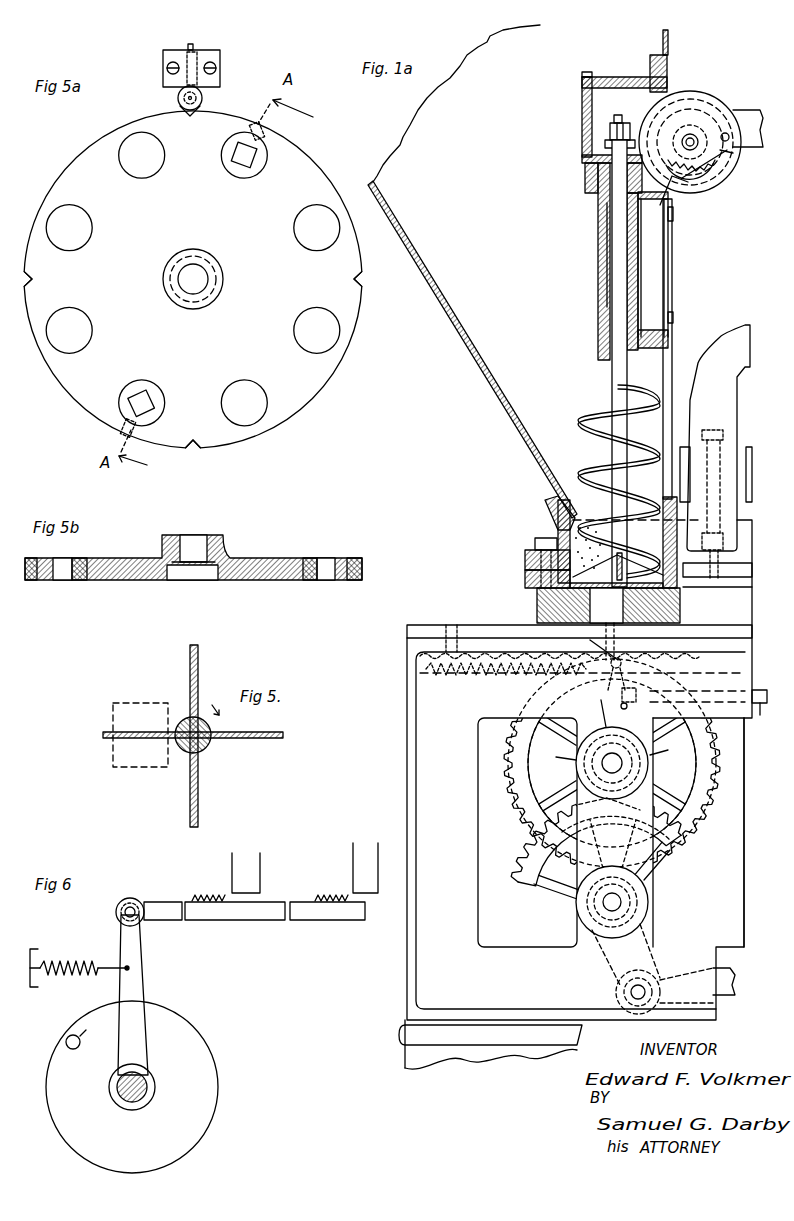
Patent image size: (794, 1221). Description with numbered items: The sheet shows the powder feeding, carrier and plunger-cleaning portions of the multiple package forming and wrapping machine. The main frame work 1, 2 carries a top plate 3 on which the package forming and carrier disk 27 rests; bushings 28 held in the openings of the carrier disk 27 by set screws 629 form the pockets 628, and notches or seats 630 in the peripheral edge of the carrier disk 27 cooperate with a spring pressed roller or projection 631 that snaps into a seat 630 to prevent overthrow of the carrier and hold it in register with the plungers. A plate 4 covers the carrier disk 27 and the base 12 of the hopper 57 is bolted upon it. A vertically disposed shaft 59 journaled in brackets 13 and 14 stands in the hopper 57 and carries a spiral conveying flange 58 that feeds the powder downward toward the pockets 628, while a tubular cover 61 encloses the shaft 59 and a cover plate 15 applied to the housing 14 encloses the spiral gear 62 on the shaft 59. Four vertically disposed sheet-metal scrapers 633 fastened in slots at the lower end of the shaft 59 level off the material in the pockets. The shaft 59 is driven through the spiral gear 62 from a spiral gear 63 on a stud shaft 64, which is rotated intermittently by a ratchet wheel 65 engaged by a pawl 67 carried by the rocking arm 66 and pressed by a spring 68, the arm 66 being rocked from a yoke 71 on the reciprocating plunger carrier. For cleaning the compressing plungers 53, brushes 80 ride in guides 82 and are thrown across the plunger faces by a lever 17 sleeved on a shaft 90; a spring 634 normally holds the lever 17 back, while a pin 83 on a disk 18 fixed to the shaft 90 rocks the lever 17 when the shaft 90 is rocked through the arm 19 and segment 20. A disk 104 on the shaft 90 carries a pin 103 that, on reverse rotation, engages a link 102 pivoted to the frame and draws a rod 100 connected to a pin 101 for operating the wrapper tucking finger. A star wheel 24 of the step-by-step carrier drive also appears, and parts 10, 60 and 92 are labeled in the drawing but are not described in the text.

In FIG. 1A, the main frame work 1 is at (399, 1036).
In FIG. 1A, the main frame work 2 is at (407, 822).
In FIG. 1A, the top plate 3 is at (413, 625).
In FIG. 1A, the plate 4 is at (526, 580).
In FIG. 1A, the standard 10 is at (752, 340).
In FIG. 1A, the base of the hopper 12 is at (526, 560).
In FIG. 1A, the bracket 13 is at (596, 340).
In FIG. 1A, the bracket 14 is at (581, 106).
In FIG. 1A, the cover plate 15 is at (620, 76).
In FIG. 6, the lever 17 is at (142, 952).
In FIG. 6, the disk 18 is at (193, 1033).
In FIG. 1A, the disk 18 is at (563, 766).
In FIG. 1A, the arm 19 is at (737, 952).
In FIG. 1A, the segment 20 is at (527, 862).
In FIG. 1A, the star wheel 24 is at (655, 770).
In FIG. 5A, the carrier disk 27 is at (310, 378).
In FIG. 5B, the carrier disk 27 is at (193, 557).
In FIG. 1A, the carrier disk 27 is at (537, 606).
In FIG. 5A, the bushing 28 is at (158, 416).
In FIG. 5B, the bushing 28 is at (80, 558).
In FIG. 6, the compressing plungers 53 is at (262, 858).
In FIG. 1A, the hopper 57 is at (470, 362).
In FIG. 1A, the spiral conveying flange 58 is at (600, 444).
In FIG. 5, the shaft 59 is at (208, 745).
In FIG. 1A, the shaft 59 is at (614, 229).
In FIG. 1A, the bearing 60 is at (600, 362).
In FIG. 1A, the tubular cover 61 is at (596, 253).
In FIG. 1A, the spiral gear 62 is at (604, 144).
In FIG. 1A, the spiral gear 63 is at (682, 197).
In FIG. 1A, the stud shaft 64 is at (693, 134).
In FIG. 1A, the ratchet wheel 65 is at (695, 175).
In FIG. 1A, the arm 66 is at (758, 110).
In FIG. 1A, the pawl 67 is at (720, 160).
In FIG. 1A, the spring 68 is at (728, 140).
In FIG. 1A, the yoke 71 is at (552, 520).
In FIG. 6, the brushes 80 is at (270, 885).
In FIG. 6, the guides 82 is at (275, 920).
In FIG. 1A, the guides 82 is at (598, 525).
In FIG. 6, the pin 83 is at (66, 1042).
In FIG. 1A, the pin 83 is at (549, 752).
In FIG. 6, the shaft 90 is at (150, 1090).
In FIG. 1A, the shaft 90 is at (622, 765).
In FIG. 1A, the disk 92 is at (622, 900).
In FIG. 1A, the rod 100 is at (759, 717).
In FIG. 1A, the pin 101 is at (580, 655).
In FIG. 1A, the link 102 is at (644, 693).
In FIG. 1A, the pin 103 is at (628, 708).
In FIG. 1A, the disk 104 is at (652, 757).
In FIG. 5A, the pockets 628 is at (144, 174).
In FIG. 5B, the pockets 628 is at (63, 582).
In FIG. 5, the pockets 628 is at (131, 750).
In FIG. 1A, the pockets 628 is at (588, 662).
In FIG. 5A, the set screws 629 is at (123, 421).
In FIG. 5B, the set screws 629 is at (27, 582).
In FIG. 5A, the notches 630 is at (193, 450).
In FIG. 5A, the spring pressed roller 631 is at (205, 100).
In FIG. 5, the scrapers 633 is at (199, 657).
In FIG. 1A, the scrapers 633 is at (618, 569).
In FIG. 6, the spring 634 is at (77, 963).
In FIG. 1A, the spring 634 is at (471, 676).